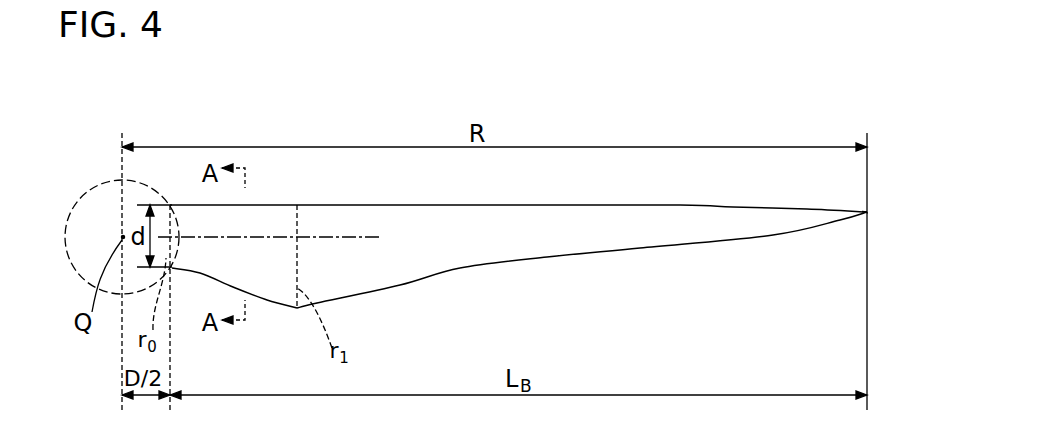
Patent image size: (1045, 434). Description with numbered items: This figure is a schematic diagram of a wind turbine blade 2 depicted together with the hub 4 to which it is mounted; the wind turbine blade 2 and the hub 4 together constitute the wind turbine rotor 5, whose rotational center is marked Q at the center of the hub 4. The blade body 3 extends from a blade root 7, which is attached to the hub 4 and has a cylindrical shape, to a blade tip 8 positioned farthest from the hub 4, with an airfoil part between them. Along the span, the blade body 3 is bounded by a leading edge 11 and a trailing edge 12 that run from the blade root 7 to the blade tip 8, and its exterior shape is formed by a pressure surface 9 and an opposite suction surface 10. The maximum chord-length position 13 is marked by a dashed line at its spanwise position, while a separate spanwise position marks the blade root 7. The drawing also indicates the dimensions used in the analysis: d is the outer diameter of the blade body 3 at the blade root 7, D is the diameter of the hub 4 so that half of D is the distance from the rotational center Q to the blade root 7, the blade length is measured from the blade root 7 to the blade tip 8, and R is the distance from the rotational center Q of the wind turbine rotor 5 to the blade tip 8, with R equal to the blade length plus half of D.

The wind turbine blade 2 is at (528, 283).
The blade body 3 is at (590, 245).
The hub 4 is at (112, 195).
The wind turbine rotor 5 is at (693, 80).
The blade root 7 is at (166, 200).
The blade tip 8 is at (870, 214).
The pressure surface 9 is at (362, 273).
The suction surface 10 is at (462, 257).
The leading edge 11 is at (402, 203).
The trailing edge 12 is at (398, 290).
The maximum chord-length position 13 is at (297, 221).